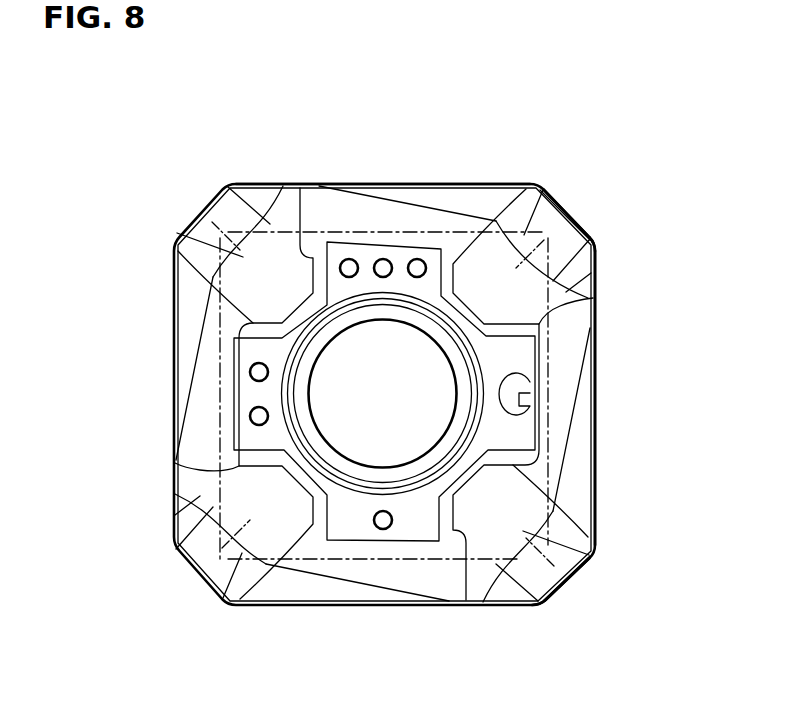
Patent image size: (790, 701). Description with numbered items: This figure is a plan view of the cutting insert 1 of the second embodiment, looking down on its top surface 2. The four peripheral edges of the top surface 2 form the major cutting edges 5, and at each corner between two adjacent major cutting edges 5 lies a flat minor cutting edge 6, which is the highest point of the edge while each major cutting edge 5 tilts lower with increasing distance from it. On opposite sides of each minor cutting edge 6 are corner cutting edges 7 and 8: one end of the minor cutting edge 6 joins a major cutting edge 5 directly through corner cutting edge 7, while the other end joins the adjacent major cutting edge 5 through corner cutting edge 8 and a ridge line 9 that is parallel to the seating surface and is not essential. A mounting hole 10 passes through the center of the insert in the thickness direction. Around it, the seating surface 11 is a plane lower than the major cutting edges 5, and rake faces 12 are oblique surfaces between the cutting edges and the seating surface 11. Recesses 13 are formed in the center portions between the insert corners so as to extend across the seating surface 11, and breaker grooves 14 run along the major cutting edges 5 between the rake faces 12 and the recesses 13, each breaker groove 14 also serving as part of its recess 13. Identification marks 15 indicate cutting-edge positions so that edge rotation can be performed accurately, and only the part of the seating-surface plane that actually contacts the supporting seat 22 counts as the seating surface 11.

The cutting insert 1 is at (436, 170).
The top surface 2 is at (560, 300).
The major cutting edges 5 is at (406, 183).
The minor cutting edges 6 is at (573, 203).
The corner cutting edge 7 is at (540, 185).
The corner cutting edge 8 is at (595, 240).
The ridge line 9 is at (466, 598).
The mounting hole 10 is at (342, 369).
The seating surface 11 is at (292, 262).
The rake faces 12 is at (500, 230).
The recesses 13 is at (497, 355).
The breaker grooves 14 is at (567, 377).
The identification marks 15 is at (373, 520).
The supporting seat 22 is at (240, 257).